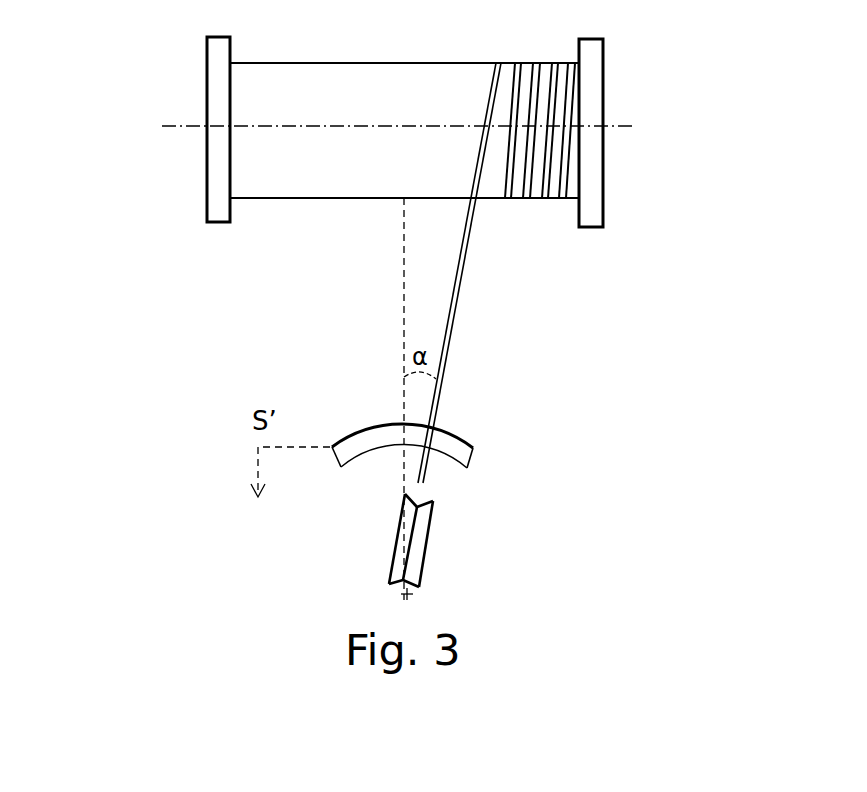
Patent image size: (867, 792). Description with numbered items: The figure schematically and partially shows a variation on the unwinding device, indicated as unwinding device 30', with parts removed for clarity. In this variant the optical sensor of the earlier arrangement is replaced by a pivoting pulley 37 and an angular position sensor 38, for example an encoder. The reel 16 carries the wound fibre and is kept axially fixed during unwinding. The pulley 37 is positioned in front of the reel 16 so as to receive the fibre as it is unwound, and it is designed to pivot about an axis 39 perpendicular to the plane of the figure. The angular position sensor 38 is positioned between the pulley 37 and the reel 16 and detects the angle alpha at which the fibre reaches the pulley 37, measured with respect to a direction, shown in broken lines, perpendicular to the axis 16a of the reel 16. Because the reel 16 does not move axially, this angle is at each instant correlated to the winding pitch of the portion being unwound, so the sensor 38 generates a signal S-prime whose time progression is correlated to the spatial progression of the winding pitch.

The unwinding device 30' is at (723, 44).
The reel 16 is at (331, 191).
The axis 16a is at (178, 126).
The angular position sensor 38 is at (469, 452).
The pivoting pulley 37 is at (418, 548).
The axis 39 is at (412, 598).